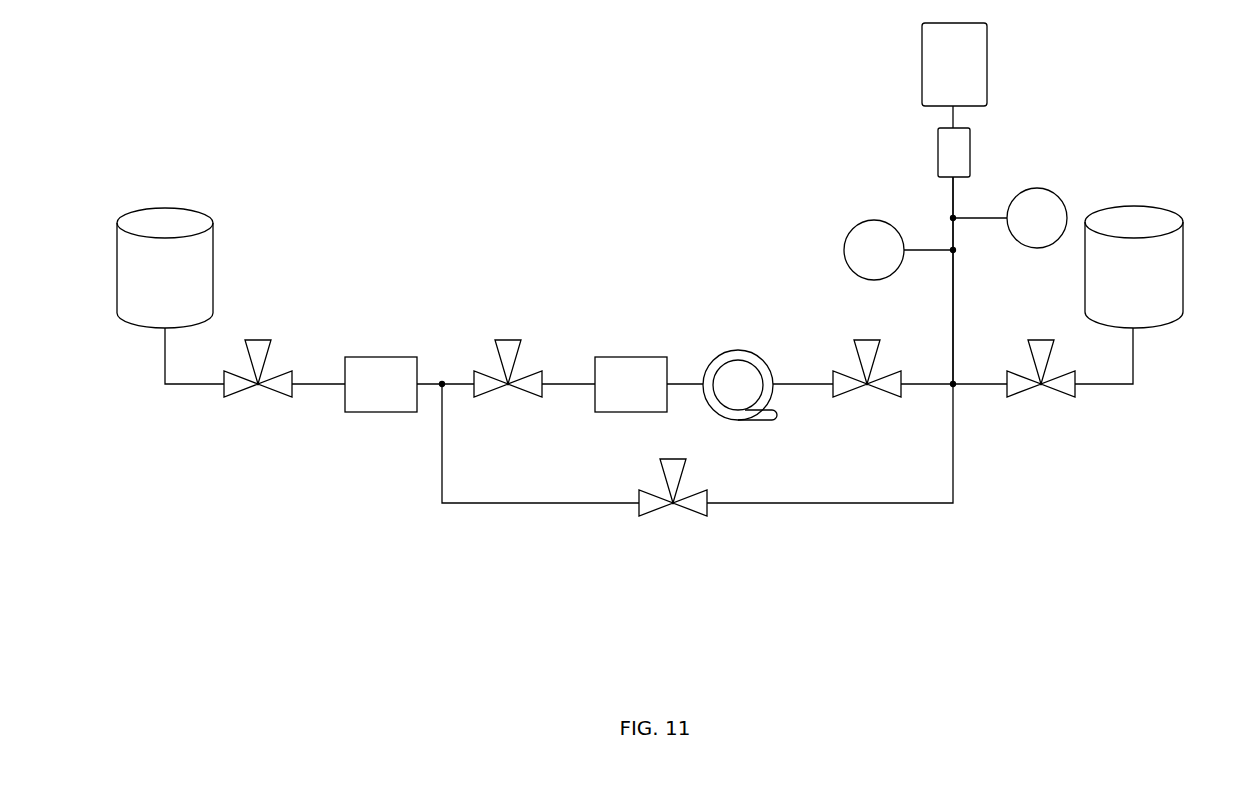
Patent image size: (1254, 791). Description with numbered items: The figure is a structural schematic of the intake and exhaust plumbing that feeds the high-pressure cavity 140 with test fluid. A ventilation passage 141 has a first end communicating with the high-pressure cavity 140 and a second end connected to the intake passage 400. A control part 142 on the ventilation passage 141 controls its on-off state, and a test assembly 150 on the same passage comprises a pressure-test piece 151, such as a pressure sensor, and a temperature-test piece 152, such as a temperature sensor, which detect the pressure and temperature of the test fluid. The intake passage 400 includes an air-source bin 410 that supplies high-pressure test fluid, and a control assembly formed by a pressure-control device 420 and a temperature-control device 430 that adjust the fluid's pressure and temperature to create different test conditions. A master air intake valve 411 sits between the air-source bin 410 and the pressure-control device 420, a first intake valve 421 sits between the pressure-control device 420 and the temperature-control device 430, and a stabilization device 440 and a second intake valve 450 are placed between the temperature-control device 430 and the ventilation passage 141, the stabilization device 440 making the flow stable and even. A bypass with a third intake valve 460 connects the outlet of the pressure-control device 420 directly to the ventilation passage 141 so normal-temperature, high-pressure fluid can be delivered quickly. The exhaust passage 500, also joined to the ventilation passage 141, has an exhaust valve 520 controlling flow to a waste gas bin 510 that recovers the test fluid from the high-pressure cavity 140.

The high-pressure cavity 140 is at (970, 65).
The ventilation passage 141 is at (950, 190).
The control part 142 is at (955, 143).
The test assembly 150 is at (410, 130).
The pressure-test piece 151 is at (1040, 190).
The temperature-test piece 152 is at (845, 250).
The intake passage 400 is at (160, 130).
The air-source bin 410 is at (148, 268).
The master air intake valve 411 is at (258, 352).
The pressure-control device 420 is at (382, 365).
The first intake valve 421 is at (508, 345).
The temperature-control device 430 is at (631, 365).
The stabilization device 440 is at (738, 350).
The second intake valve 450 is at (850, 388).
The third intake valve 460 is at (650, 507).
The exhaust passage 500 is at (287, 130).
The waste gas bin 510 is at (1153, 268).
The exhaust valve 520 is at (1018, 388).